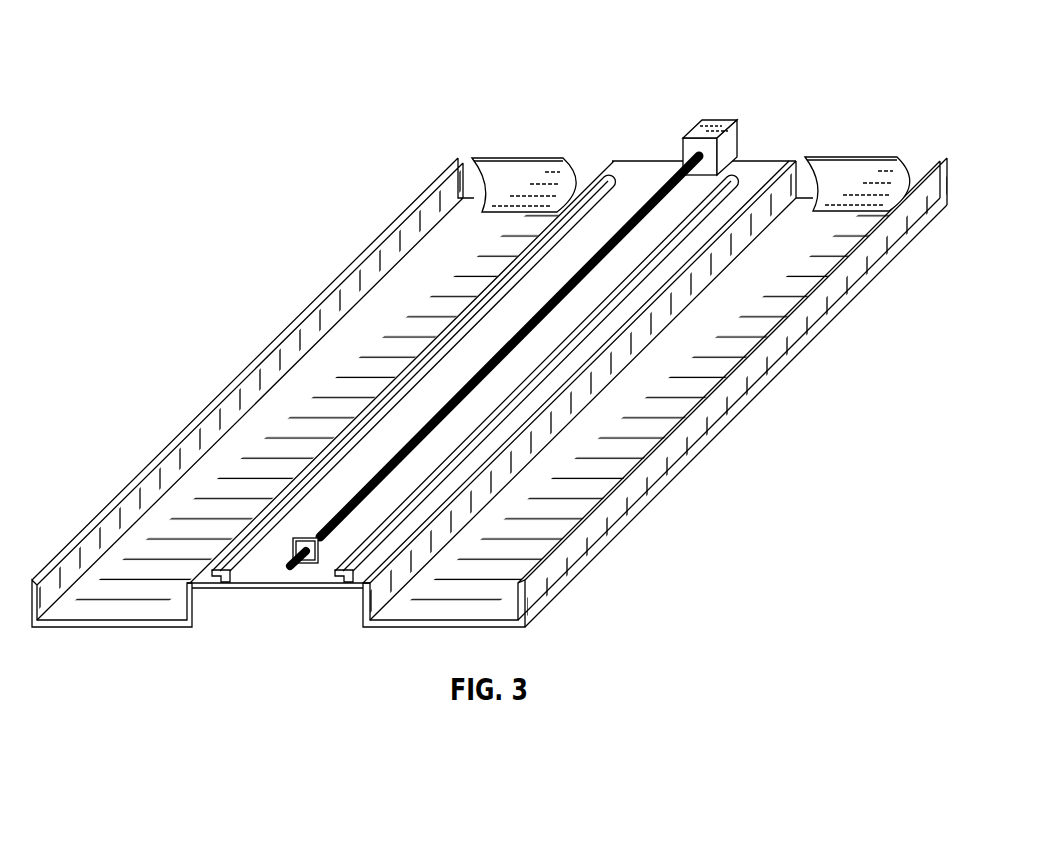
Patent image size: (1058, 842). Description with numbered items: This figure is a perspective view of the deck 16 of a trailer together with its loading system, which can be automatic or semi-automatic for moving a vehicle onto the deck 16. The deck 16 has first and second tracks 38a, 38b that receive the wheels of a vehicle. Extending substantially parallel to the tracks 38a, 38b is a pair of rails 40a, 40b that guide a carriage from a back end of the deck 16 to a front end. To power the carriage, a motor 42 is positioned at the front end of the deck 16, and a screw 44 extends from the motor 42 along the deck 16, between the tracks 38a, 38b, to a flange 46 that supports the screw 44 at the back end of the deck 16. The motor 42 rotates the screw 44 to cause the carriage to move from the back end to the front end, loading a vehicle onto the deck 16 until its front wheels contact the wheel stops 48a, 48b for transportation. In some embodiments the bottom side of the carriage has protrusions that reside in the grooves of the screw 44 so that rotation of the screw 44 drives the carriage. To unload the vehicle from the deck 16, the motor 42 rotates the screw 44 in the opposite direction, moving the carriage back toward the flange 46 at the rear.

The deck 16 is at (227, 145).
The first track 38a is at (286, 403).
The second track 38b is at (676, 377).
The rail 40a is at (433, 360).
The rail 40b is at (737, 173).
The motor 42 is at (708, 118).
The screw 44 is at (668, 178).
The flange 46 is at (302, 564).
The wheel stop 48a is at (510, 172).
The wheel stop 48b is at (858, 167).